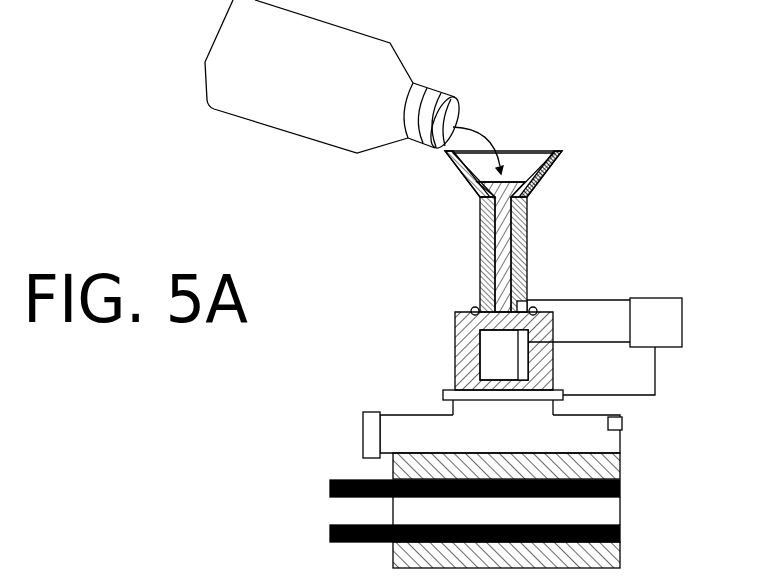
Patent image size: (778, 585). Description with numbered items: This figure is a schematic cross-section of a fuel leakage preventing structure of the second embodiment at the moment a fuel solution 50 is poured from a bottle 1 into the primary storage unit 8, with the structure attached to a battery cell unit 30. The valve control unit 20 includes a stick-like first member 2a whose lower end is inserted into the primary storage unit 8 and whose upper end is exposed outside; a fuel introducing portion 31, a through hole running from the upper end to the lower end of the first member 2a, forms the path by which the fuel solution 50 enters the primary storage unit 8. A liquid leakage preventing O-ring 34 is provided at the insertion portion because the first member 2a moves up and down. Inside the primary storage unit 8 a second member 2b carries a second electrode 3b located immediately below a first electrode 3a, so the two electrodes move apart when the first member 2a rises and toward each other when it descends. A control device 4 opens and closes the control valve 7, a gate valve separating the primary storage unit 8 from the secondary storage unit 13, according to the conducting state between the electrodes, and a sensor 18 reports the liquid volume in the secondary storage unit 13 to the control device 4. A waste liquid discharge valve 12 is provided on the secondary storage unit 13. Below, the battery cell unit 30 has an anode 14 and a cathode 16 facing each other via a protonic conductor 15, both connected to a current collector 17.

The bottle of ink 1 is at (267, 120).
The fuel solution 50 is at (522, 180).
The first member 2a is at (547, 170).
The valve control unit 20 is at (555, 269).
The fuel introducing portion 31 is at (528, 217).
The first electrode 3a is at (531, 287).
The liquid leakage preventing O-ring 34 is at (472, 303).
The primary storage unit 8 is at (455, 320).
The second member 2b is at (485, 357).
The second electrode 3b is at (528, 372).
The control valve 7 is at (443, 393).
The control device 4 is at (682, 328).
The waste liquid discharge valve 12 is at (363, 423).
The sensor 18 is at (622, 422).
The secondary storage unit 13 is at (622, 442).
The anode 14 is at (622, 467).
The protonic conductor 15 is at (622, 507).
The cathode 16 is at (622, 555).
The current collector 17 is at (330, 488).
The battery cell unit 30 is at (513, 487).